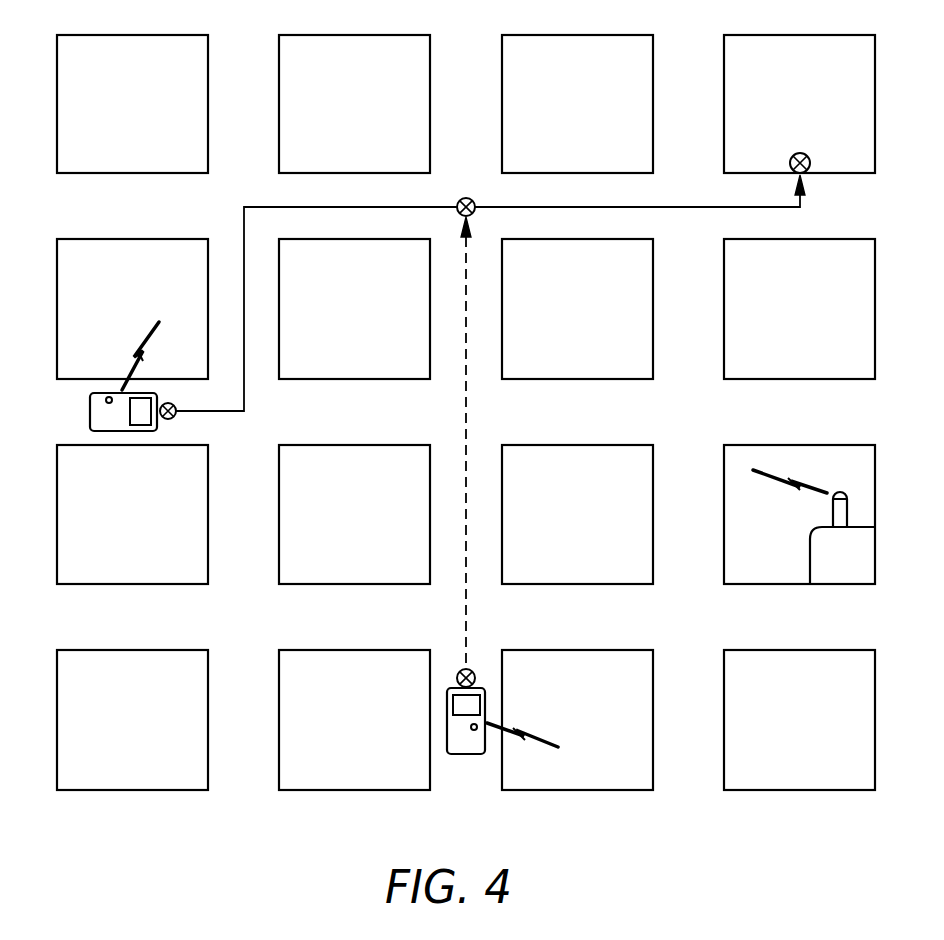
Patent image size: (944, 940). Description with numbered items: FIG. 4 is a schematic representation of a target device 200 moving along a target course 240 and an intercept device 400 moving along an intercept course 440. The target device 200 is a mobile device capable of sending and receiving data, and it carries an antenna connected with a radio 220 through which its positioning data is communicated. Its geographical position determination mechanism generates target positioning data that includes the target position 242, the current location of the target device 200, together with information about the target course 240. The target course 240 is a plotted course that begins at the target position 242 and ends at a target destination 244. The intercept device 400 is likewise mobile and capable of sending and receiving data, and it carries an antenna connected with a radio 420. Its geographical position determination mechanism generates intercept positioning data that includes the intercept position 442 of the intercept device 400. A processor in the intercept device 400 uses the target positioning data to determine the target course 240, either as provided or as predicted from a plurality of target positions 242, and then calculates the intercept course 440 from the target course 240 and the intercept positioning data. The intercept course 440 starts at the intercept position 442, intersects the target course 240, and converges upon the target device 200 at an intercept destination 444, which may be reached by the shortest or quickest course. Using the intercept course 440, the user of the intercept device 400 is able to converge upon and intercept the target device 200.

The target device 200 is at (88, 413).
The radio 220 is at (109, 396).
The target course 240 is at (245, 396).
The target position 242 is at (168, 420).
The target destination 244 is at (800, 153).
The intercept device 400 is at (470, 757).
The radio 420 is at (471, 727).
The intercept course 440 is at (466, 409).
The intercept position 442 is at (471, 670).
The intercept destination 444 is at (466, 198).